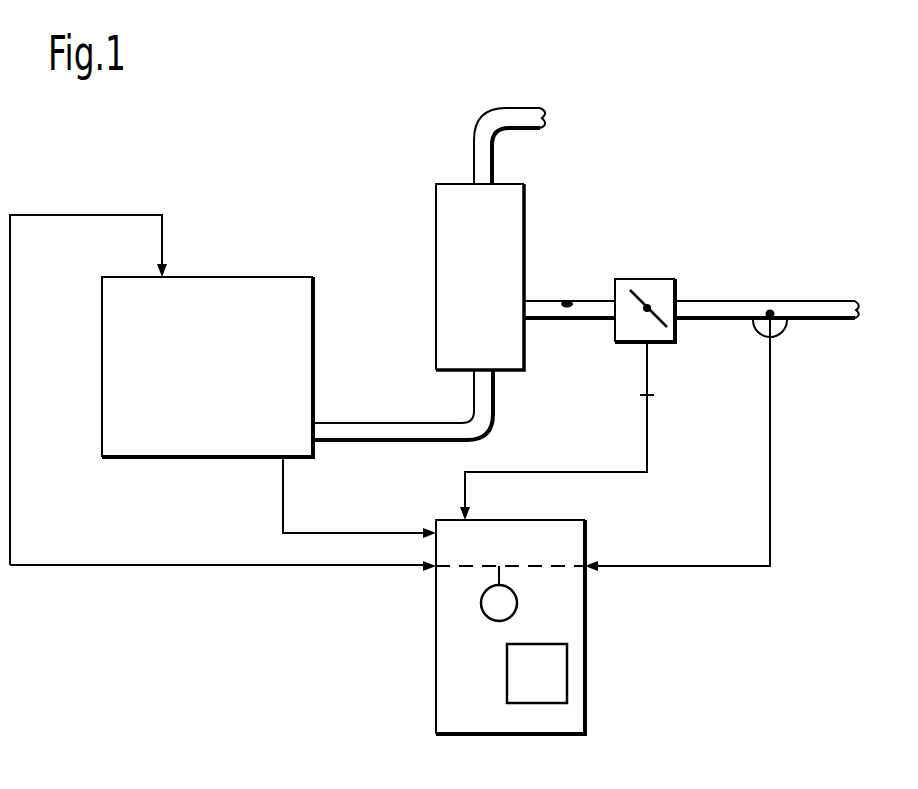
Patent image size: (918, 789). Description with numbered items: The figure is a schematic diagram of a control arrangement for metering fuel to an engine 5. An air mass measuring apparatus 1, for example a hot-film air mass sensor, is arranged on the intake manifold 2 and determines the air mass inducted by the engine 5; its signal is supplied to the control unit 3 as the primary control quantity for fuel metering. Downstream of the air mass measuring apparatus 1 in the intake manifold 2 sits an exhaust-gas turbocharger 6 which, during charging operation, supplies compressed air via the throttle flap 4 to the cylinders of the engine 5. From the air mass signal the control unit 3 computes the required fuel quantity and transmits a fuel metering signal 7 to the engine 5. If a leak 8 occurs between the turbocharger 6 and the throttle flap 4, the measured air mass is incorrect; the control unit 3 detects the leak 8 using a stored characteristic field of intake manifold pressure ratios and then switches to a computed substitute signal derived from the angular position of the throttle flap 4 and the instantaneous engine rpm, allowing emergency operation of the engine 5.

The air mass measuring apparatus 1 is at (788, 325).
The intake manifold 2 is at (720, 305).
The control unit 3 is at (590, 528).
The throttle flap 4 is at (648, 285).
The engine 5 is at (260, 293).
The exhaust-gas turbocharger 6 is at (445, 208).
The fuel metering signal 7 is at (115, 225).
The leak 8 is at (568, 300).